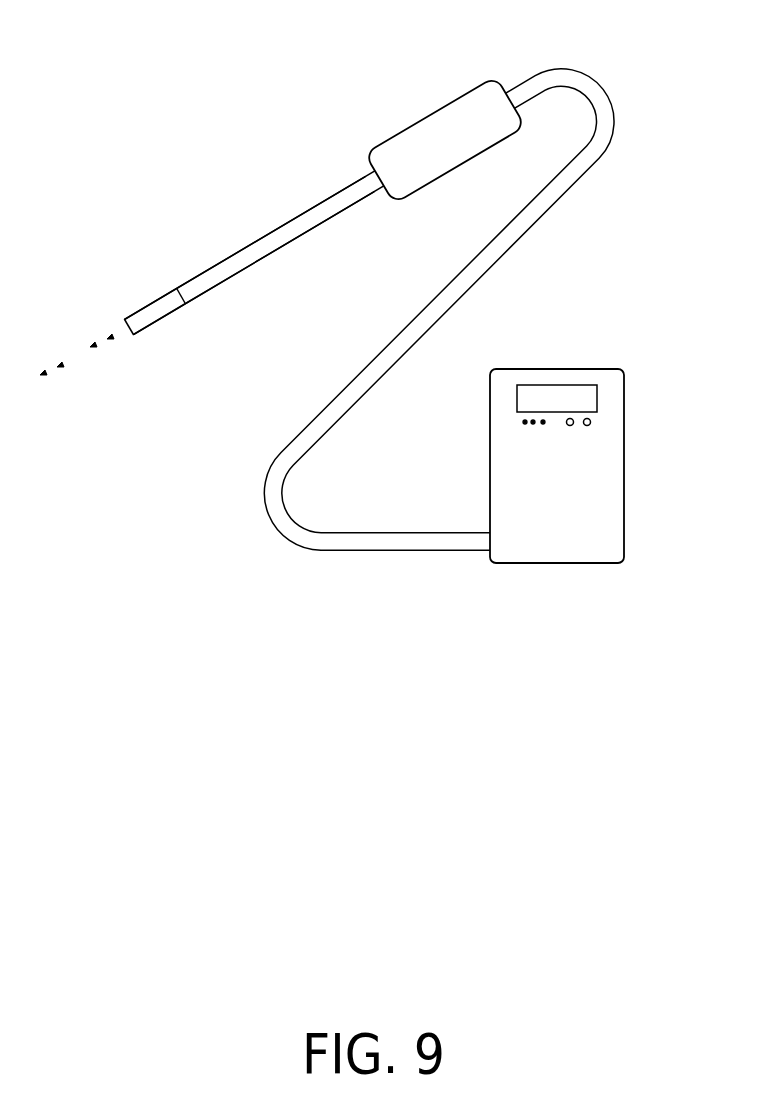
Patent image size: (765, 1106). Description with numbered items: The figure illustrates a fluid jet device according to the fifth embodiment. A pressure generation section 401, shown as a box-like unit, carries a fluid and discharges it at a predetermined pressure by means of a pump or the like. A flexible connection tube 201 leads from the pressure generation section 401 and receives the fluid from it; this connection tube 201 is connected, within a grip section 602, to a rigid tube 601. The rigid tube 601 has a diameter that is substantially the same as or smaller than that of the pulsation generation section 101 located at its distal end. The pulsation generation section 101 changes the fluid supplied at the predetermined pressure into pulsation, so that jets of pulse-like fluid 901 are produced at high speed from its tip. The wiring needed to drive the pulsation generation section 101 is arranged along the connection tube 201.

The pulsation generation section 101 is at (150, 310).
The rigid tube 601 is at (282, 232).
The grip section 602 is at (438, 128).
The connection tube 201 is at (430, 320).
The pressure generation section 401 is at (558, 540).
The pulse-like fluid 901 is at (43, 377).